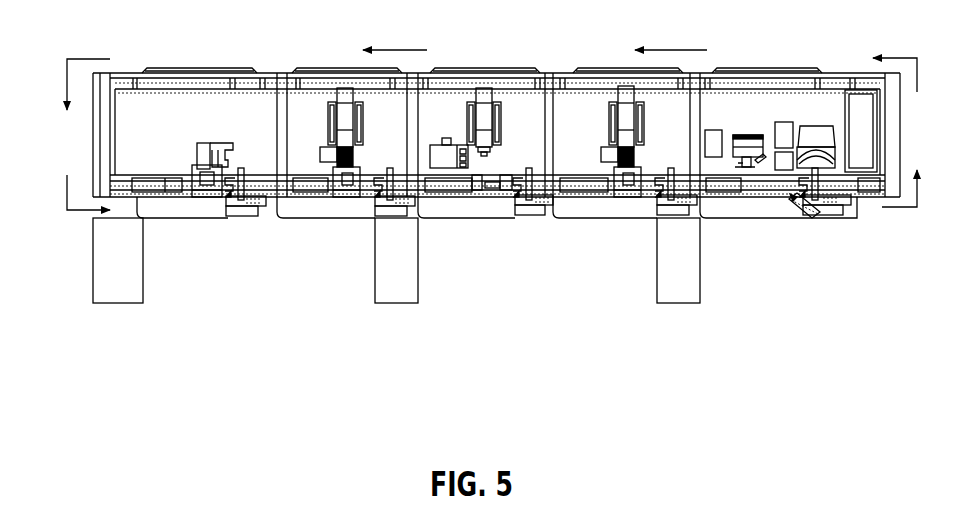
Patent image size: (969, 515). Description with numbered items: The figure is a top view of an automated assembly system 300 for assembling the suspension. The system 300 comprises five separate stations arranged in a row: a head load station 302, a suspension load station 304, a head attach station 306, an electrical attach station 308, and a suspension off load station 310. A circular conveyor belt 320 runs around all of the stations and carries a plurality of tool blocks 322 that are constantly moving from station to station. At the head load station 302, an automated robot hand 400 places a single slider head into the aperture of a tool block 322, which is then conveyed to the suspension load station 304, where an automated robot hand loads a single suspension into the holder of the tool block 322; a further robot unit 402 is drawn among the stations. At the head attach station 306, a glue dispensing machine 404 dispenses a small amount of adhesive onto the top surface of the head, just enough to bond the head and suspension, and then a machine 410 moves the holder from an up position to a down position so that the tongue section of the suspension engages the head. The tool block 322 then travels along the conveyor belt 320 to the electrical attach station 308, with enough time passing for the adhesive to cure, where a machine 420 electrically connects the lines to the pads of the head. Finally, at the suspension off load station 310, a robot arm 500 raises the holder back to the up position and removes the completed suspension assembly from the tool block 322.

The automated assembly system 300 is at (222, 378).
The head load station 302 is at (440, 208).
The suspension load station 304 is at (595, 208).
The head attach station 306 is at (730, 208).
The electrical attach station 308 is at (170, 208).
The suspension off load station 310 is at (322, 208).
The circular conveyor belt 320 is at (93, 143).
The tool block 322 is at (233, 73).
The automated robot hand 400 is at (483, 88).
The processing tool 402 is at (627, 88).
The glue dispensing machine 404 is at (748, 134).
The machine 410 is at (815, 126).
The machine 420 is at (208, 146).
The robot arm 500 is at (347, 88).